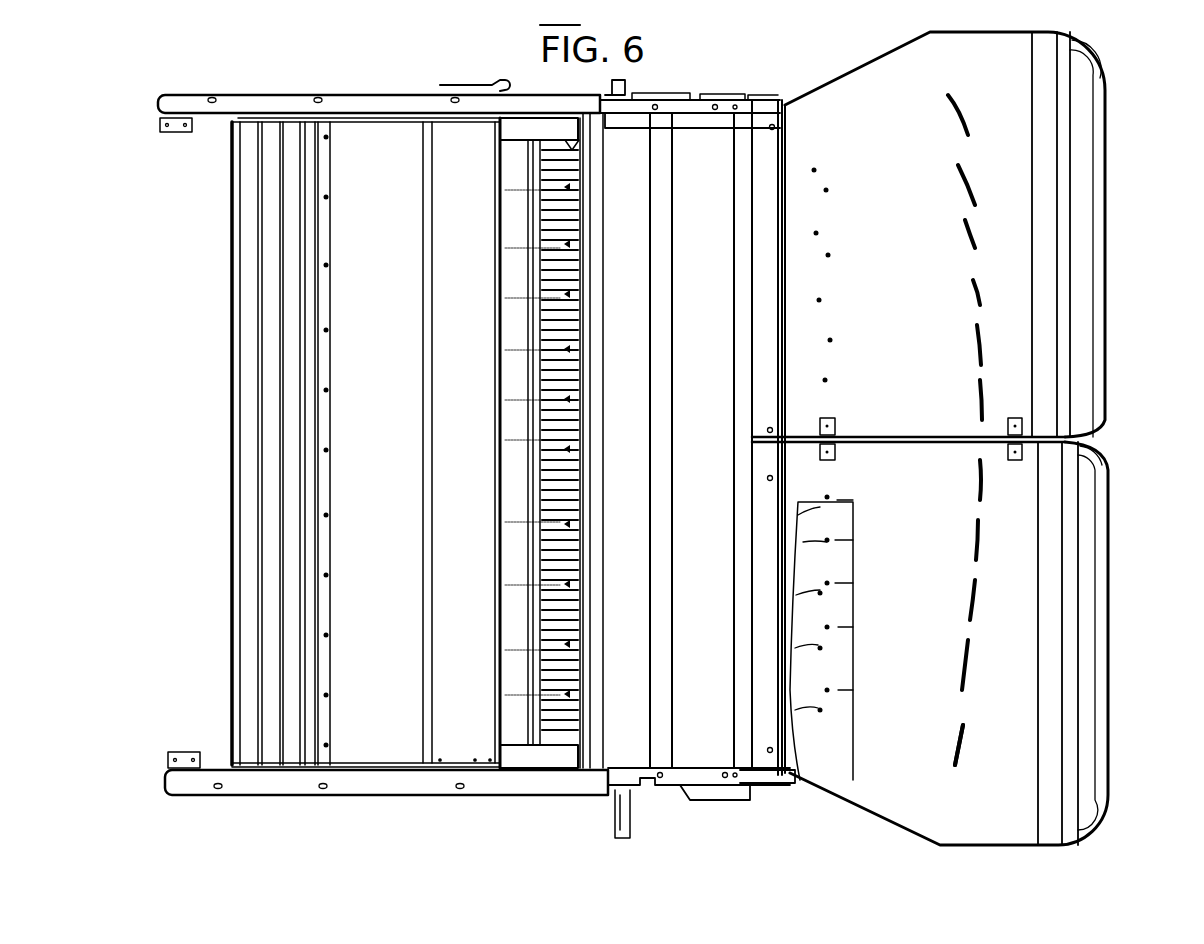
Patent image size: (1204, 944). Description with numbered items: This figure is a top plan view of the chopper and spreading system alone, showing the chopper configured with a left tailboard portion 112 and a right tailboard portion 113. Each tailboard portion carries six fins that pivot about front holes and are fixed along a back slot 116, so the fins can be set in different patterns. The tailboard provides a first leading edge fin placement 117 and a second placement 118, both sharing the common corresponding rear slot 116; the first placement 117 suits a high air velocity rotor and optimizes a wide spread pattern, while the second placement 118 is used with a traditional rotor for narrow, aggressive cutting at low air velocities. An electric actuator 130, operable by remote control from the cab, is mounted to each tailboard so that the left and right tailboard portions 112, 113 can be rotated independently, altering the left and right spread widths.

The left tailboard portion 112 is at (1112, 637).
The right tailboard portion 113 is at (1120, 250).
The back slot 116 is at (967, 758).
The first leading edge fin placement 117 is at (860, 720).
The second placement 118 is at (795, 780).
The electric actuator 130 is at (740, 800).